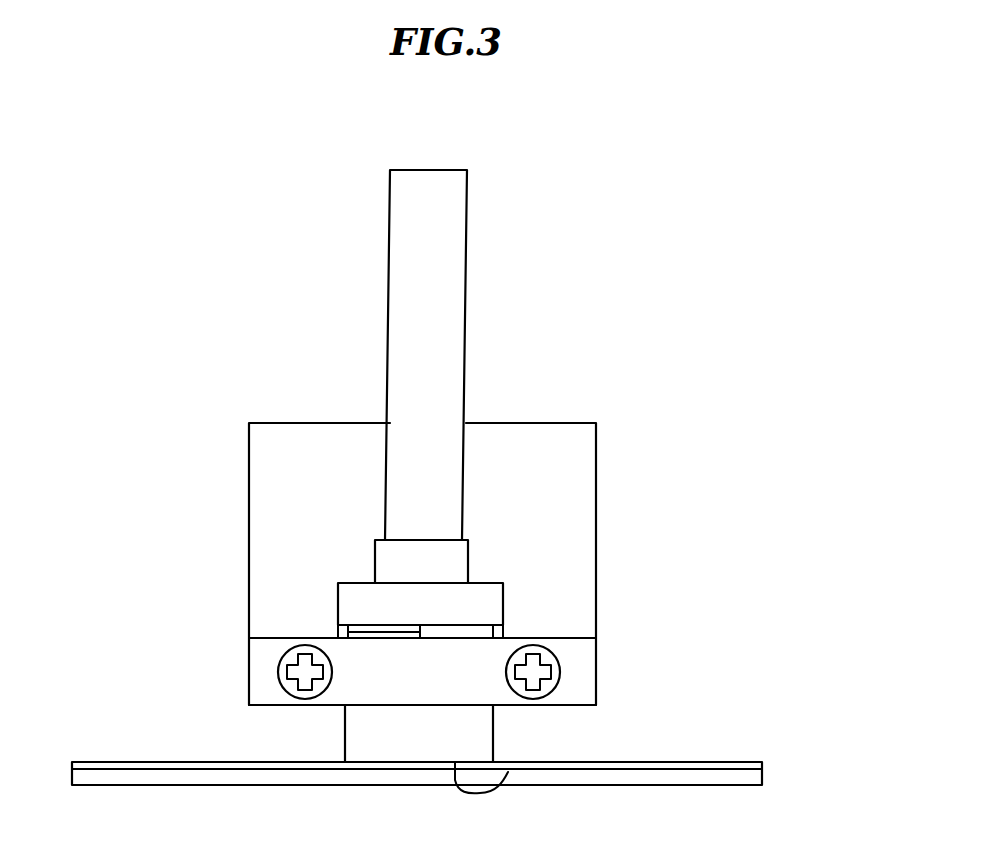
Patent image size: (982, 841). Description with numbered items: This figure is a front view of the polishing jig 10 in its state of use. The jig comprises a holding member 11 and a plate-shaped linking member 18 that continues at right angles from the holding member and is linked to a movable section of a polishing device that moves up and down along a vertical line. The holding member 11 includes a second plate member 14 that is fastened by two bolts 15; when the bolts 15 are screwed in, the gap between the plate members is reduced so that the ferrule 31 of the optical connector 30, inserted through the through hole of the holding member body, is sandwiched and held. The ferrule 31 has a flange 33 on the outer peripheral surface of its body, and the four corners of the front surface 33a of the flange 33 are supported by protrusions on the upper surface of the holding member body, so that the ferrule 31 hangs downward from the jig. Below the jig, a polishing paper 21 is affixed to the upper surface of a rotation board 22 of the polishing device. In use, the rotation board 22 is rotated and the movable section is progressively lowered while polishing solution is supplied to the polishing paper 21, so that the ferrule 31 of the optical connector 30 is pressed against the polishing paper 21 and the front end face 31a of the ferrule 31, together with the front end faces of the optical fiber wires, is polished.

The polishing jig 10 is at (504, 404).
The holding member 11 is at (572, 637).
The second plate member 14 is at (578, 665).
The bolts 15 is at (292, 690).
The linking member 18 is at (604, 534).
The polishing paper 21 is at (110, 762).
The rotation board 22 is at (397, 740).
The optical connector 30 is at (355, 564).
The ferrule 31 is at (336, 728).
The front end face 31a is at (508, 772).
The flange 33 is at (345, 604).
The front surface 33a is at (420, 640).